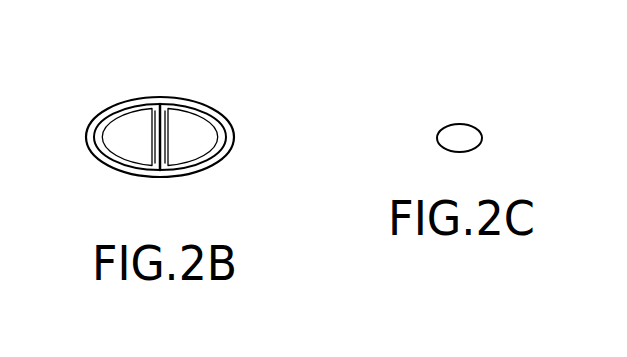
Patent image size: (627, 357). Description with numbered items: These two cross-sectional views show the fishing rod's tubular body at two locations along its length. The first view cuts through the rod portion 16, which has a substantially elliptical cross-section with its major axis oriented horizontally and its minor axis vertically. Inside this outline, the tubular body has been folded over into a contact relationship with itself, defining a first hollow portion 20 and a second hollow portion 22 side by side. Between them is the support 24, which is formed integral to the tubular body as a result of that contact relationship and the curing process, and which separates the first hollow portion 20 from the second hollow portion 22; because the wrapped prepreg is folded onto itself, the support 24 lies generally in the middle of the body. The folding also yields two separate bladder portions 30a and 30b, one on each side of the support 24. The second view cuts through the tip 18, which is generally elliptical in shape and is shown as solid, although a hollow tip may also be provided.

In FIG. 2B, the rod portion 16 is at (228, 150).
In FIG. 2C, the tip 18 is at (482, 138).
In FIG. 2B, the first hollow portion 20 is at (115, 132).
In FIG. 2B, the second hollow portion 22 is at (192, 127).
In FIG. 2B, the support 24 is at (163, 156).
In FIG. 2B, the bladder portion 30a is at (98, 129).
In FIG. 2B, the bladder portion 30b is at (222, 126).